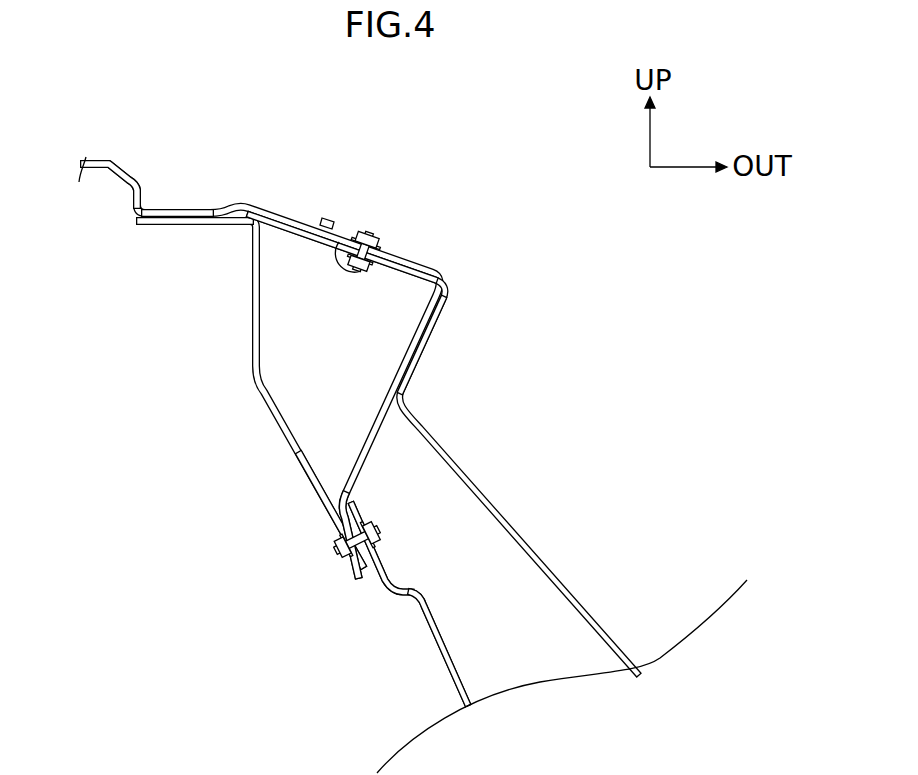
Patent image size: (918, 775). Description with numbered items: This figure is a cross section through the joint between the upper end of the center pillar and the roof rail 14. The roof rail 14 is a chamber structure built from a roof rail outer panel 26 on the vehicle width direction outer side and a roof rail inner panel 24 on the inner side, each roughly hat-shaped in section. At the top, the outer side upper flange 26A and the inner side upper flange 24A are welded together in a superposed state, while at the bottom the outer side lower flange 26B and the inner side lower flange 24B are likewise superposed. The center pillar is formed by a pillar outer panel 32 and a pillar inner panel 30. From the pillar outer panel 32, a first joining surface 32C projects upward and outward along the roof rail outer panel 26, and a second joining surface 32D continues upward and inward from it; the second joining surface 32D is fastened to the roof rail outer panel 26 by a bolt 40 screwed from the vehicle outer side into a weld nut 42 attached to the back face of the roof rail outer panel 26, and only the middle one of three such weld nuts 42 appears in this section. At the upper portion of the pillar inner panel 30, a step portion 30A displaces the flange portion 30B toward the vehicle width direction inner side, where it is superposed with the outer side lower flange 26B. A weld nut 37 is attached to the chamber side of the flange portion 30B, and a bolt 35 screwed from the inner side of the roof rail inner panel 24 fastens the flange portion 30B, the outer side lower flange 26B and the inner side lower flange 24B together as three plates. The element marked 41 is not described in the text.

The roof rail 14 is at (247, 518).
The roof rail inner panel 24 is at (255, 385).
The inner side upper flange 24A is at (166, 228).
The inner side lower flange 24B is at (330, 502).
The roof rail outer panel 26 is at (375, 405).
The outer side upper flange 26A is at (165, 207).
The outer side lower flange 26B is at (347, 508).
The pillar inner panel 30 is at (430, 636).
The step portion 30A is at (403, 593).
The flange portion 30B is at (377, 553).
The pillar outer panel 32 is at (539, 538).
The first joining surface 32C is at (428, 345).
The second joining surface 32D is at (403, 257).
The bolt 35 is at (336, 553).
The weld nut 37 is at (380, 540).
The bolt 40 is at (368, 232).
The flange 41 is at (92, 155).
The weld nut 42 is at (328, 221).